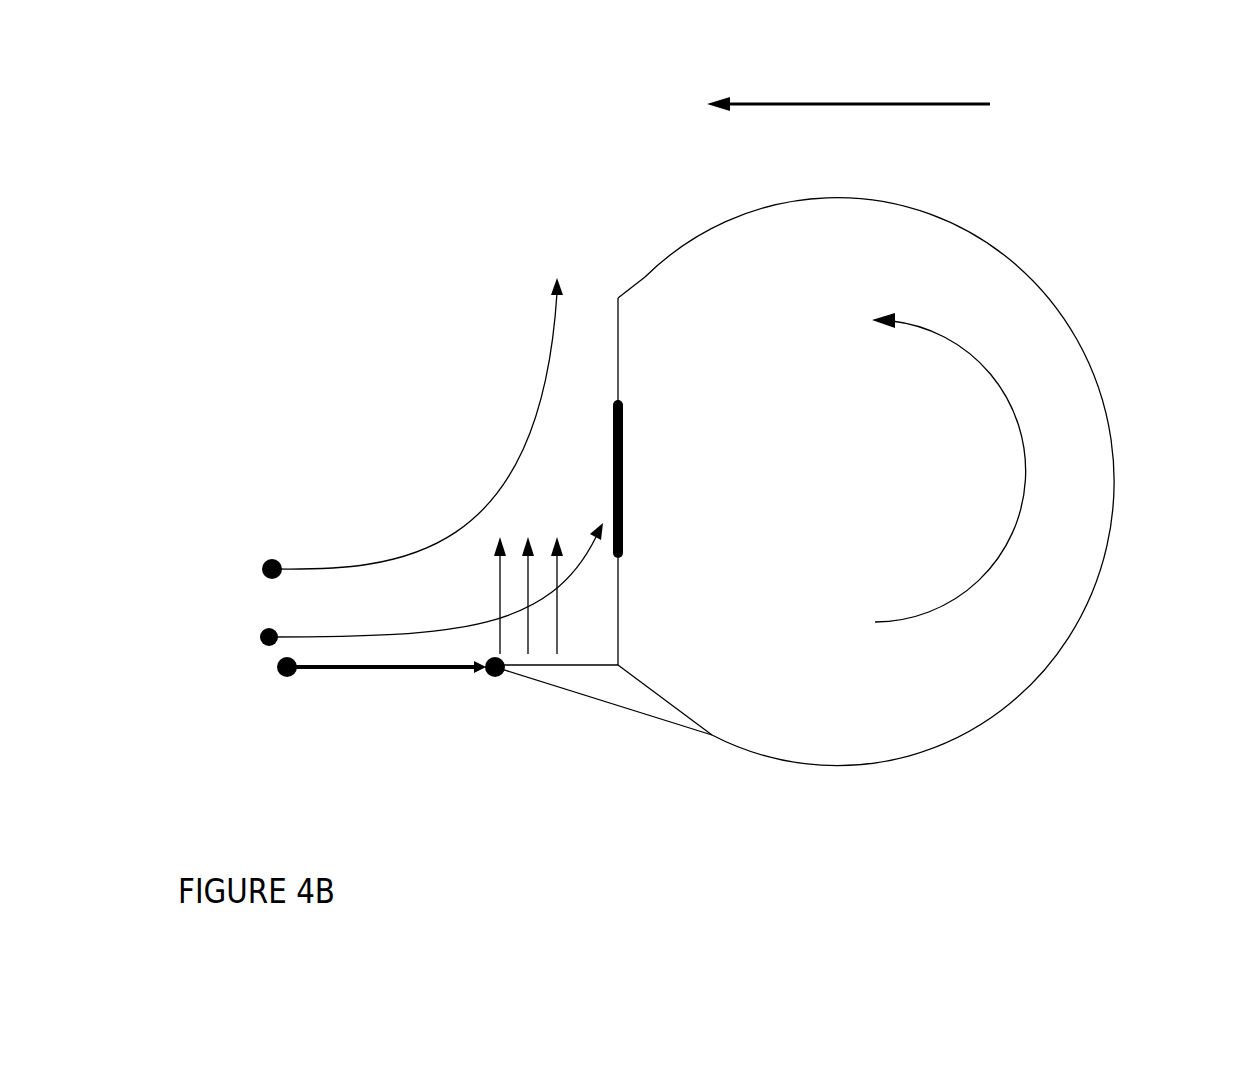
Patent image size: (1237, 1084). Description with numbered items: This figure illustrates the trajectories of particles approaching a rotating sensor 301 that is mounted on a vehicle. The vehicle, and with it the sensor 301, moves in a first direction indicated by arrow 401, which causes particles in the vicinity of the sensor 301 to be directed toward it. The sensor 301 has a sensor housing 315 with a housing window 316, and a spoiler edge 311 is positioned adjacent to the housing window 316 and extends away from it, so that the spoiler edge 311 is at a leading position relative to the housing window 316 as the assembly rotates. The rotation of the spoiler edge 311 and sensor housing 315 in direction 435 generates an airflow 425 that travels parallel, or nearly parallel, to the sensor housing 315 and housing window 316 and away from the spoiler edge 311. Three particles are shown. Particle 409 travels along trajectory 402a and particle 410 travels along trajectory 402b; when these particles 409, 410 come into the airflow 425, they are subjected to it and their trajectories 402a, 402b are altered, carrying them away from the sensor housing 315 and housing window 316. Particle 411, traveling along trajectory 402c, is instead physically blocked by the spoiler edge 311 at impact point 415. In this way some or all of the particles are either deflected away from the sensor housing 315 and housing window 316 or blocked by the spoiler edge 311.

The arrow indicating first direction 401 is at (820, 106).
The sensor 301 is at (1128, 299).
The sensor housing 315 is at (617, 357).
The housing window 316 is at (613, 467).
The direction of rotation 435 is at (1015, 523).
The particle 409 is at (262, 558).
The trajectory 402a is at (430, 550).
The particle 410 is at (262, 630).
The trajectory 402b is at (432, 628).
The particle 411 is at (280, 662).
The trajectory 402c is at (438, 666).
The airflow 425 is at (558, 637).
The impact point 415 is at (483, 677).
The spoiler edge 311 is at (573, 693).